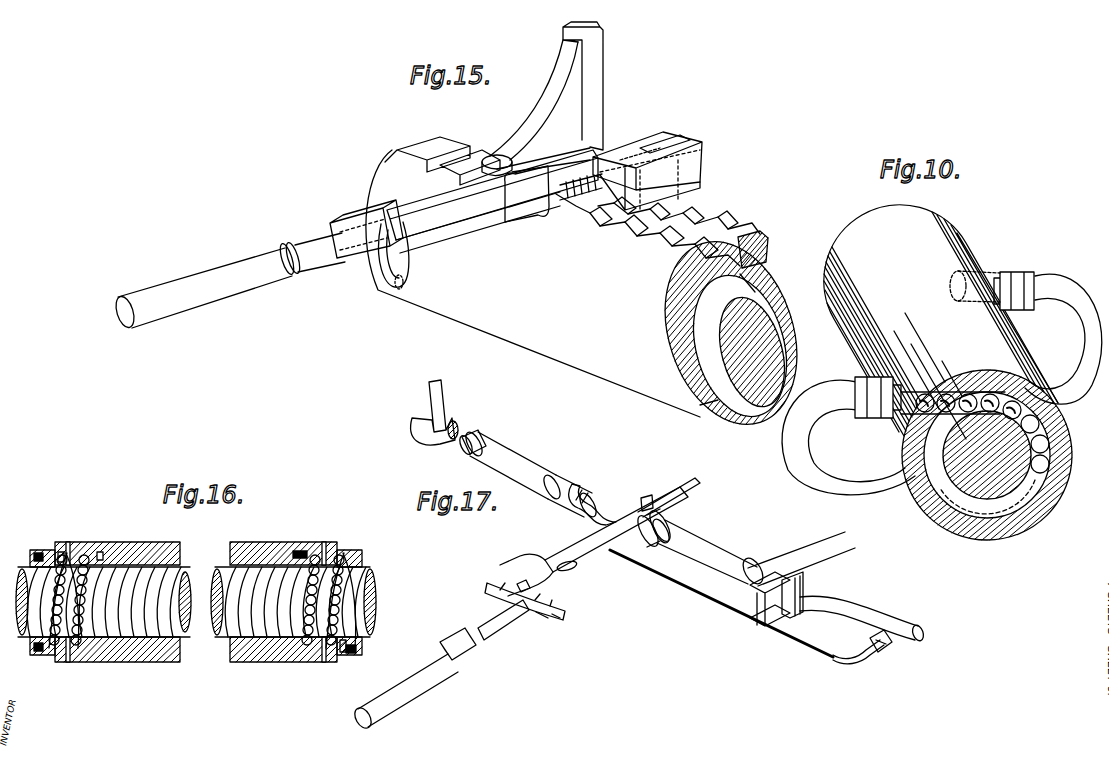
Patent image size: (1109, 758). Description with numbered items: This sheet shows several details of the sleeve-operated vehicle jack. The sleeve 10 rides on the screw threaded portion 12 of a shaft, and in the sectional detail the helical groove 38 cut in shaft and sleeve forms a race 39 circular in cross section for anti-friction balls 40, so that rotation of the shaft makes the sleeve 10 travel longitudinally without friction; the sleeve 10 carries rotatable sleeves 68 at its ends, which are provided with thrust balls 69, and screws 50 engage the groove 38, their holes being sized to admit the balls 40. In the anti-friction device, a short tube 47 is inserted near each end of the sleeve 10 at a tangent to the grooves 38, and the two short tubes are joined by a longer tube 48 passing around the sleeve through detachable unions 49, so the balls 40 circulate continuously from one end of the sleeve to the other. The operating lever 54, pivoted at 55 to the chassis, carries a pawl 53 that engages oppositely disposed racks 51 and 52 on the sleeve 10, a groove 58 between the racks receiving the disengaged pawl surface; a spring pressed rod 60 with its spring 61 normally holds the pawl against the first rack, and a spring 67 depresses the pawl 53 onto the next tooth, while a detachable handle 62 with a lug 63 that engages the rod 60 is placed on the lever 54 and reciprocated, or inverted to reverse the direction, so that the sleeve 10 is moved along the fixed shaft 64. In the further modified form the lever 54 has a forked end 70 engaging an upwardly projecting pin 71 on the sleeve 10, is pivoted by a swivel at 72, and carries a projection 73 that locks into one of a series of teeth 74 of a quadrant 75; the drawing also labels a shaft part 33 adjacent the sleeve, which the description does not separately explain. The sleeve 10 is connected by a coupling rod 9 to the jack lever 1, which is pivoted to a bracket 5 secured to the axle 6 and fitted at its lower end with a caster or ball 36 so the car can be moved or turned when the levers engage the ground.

In FIG. 17, the lever 1 is at (836, 614).
In FIG. 17, the bracket 5 is at (798, 612).
In FIG. 17, the axle 6 is at (792, 560).
In FIG. 17, the coupling rod 9 is at (706, 596).
In FIG. 15, the sleeve 10 is at (592, 296).
In FIG. 10, the sleeve 10 is at (941, 322).
In FIG. 16, the sleeve 10 is at (158, 542).
In FIG. 17, the sleeve 10 is at (595, 488).
In FIG. 16, the screw threaded portion 12 is at (178, 622).
In FIG. 17, the shaft 33 is at (518, 455).
In FIG. 17, the caster or ball 36 is at (918, 640).
In FIG. 10, the helical groove 38 is at (1048, 447).
In FIG. 16, the helical groove 38 is at (150, 592).
In FIG. 16, the race 39 is at (70, 548).
In FIG. 10, the anti-friction balls 40 is at (1010, 400).
In FIG. 16, the anti-friction balls 40 is at (48, 620).
In FIG. 10, the short tube 47 is at (962, 300).
In FIG. 10, the communicating tube 48 is at (1075, 385).
In FIG. 10, the union 49 is at (1024, 322).
In FIG. 16, the screw 50 is at (40, 552).
In FIG. 15, the toothed rack 51 is at (667, 258).
In FIG. 15, the toothed rack 52 is at (722, 230).
In FIG. 15, the pawl 53 is at (690, 192).
In FIG. 15, the lever 54 is at (426, 200).
In FIG. 17, the lever 54 is at (572, 549).
In FIG. 15, the pivot 55 is at (505, 158).
In FIG. 15, the groove 58 is at (433, 147).
In FIG. 15, the spring pressed rod 60 is at (478, 228).
In FIG. 15, the spring 61 is at (567, 200).
In FIG. 15, the detachable handle 62 is at (218, 290).
In FIG. 17, the detachable handle 62 is at (422, 678).
In FIG. 15, the lug 63 is at (397, 255).
In FIG. 15, the fixed shaft 64 is at (749, 352).
In FIG. 16, the fixed shaft 64 is at (24, 568).
In FIG. 17, the fixed shaft 64 is at (474, 438).
In FIG. 15, the spring 67 is at (660, 143).
In FIG. 16, the rotatable sleeve 68 is at (40, 653).
In FIG. 17, the rotatable sleeve 68 is at (574, 500).
In FIG. 16, the thrust balls 69 is at (104, 548).
In FIG. 17, the forked end 70 is at (684, 480).
In FIG. 17, the pin 71 is at (650, 495).
In FIG. 17, the swivel pivot 72 is at (580, 572).
In FIG. 17, the projection 73 is at (524, 582).
In FIG. 17, the teeth 74 is at (548, 612).
In FIG. 17, the quadrant 75 is at (530, 614).